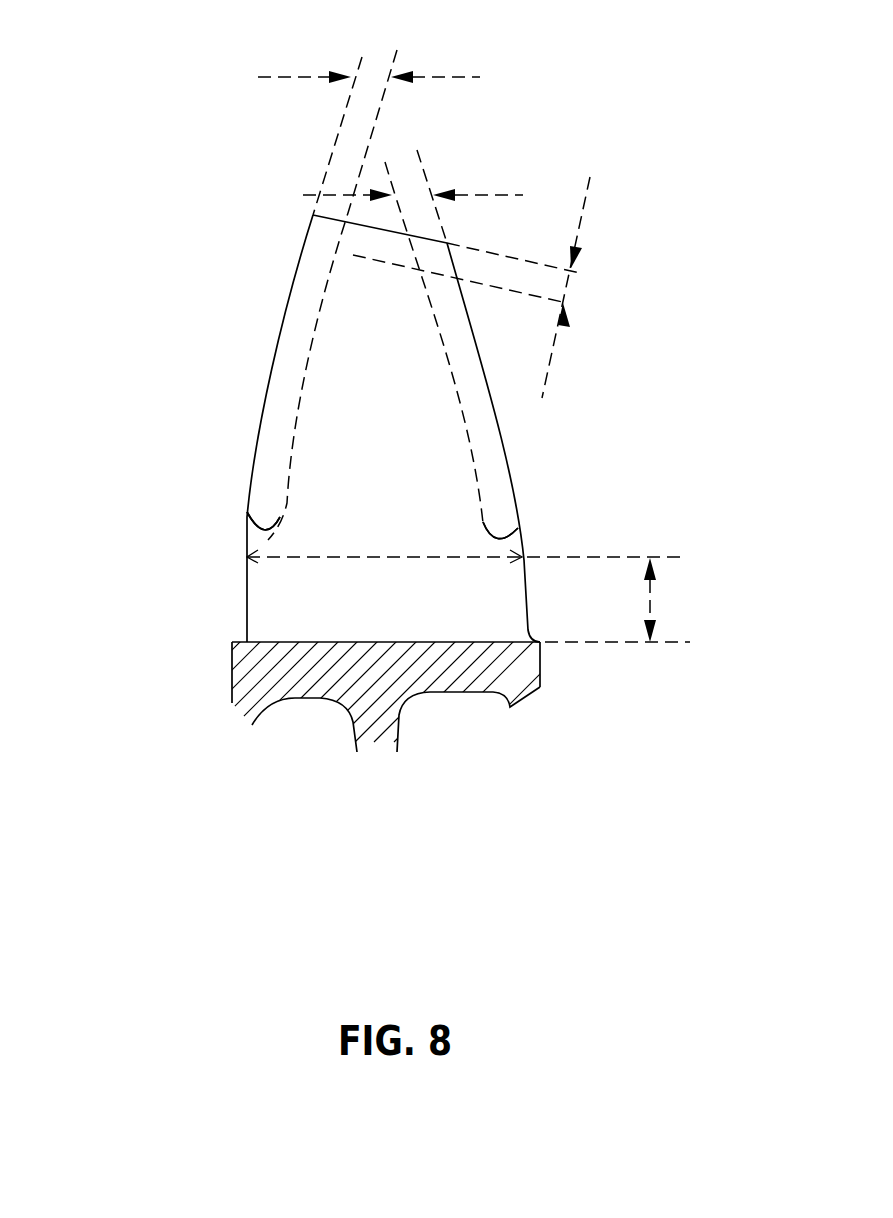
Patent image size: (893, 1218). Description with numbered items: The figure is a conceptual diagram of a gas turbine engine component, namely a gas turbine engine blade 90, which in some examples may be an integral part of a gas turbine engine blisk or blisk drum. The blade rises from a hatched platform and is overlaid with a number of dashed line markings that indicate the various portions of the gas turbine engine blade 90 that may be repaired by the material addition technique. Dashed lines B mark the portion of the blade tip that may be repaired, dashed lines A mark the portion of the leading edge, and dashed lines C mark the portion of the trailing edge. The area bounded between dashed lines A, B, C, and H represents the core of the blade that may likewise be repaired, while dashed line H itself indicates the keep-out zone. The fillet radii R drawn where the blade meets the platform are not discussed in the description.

The gas turbine engine blade 90 is at (104, 176).
The dashed lines A is at (306, 77).
The dashed lines B is at (553, 347).
The dashed lines C is at (498, 195).
The dashed line H is at (650, 600).
The fillet radius R is at (267, 528).